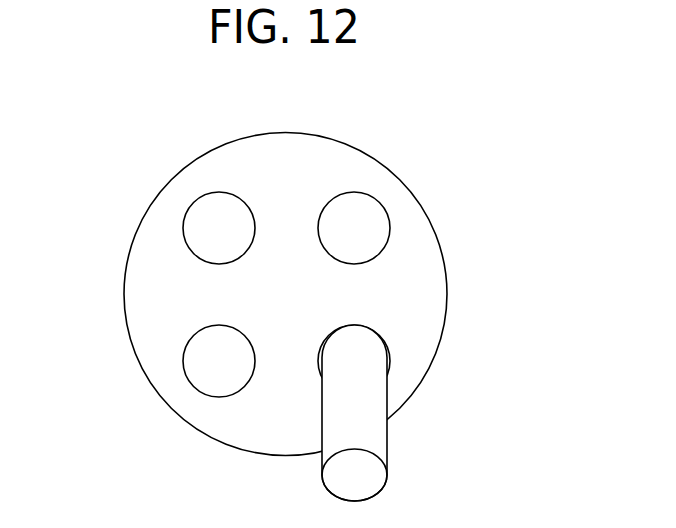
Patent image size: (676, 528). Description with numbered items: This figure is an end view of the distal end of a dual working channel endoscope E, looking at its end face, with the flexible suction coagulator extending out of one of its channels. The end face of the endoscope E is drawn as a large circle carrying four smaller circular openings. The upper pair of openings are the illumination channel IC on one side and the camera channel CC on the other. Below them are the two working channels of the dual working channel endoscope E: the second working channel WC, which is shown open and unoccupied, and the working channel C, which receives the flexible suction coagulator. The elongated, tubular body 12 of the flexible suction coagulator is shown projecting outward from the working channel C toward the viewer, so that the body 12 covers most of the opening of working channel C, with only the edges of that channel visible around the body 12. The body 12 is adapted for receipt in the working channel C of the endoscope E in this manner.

The endoscope E is at (445, 265).
The illumination channel IC is at (198, 220).
The camera channel CC is at (372, 213).
The second working channel WC is at (207, 368).
The working channel C is at (387, 358).
The elongated tubular body 12 is at (372, 435).